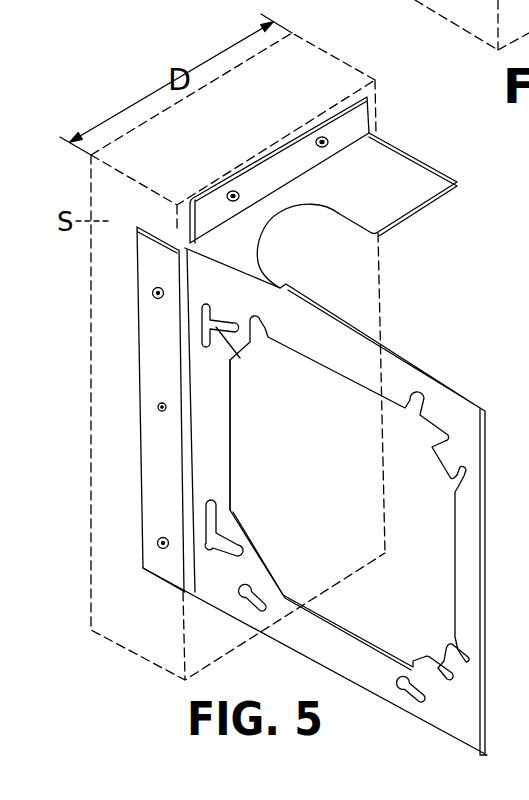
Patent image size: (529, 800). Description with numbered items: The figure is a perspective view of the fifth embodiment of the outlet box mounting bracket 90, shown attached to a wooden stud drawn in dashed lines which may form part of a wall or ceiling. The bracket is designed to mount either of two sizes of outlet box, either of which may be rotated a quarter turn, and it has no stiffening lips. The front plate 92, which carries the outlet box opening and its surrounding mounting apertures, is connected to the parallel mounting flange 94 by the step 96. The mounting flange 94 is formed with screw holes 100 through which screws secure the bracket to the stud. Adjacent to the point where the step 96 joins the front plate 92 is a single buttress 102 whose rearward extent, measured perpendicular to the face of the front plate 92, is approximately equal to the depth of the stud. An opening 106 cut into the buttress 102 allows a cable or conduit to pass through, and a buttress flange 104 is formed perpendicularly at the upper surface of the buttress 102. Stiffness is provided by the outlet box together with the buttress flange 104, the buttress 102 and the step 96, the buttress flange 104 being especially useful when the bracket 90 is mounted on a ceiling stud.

The mounting bracket 90 is at (411, 362).
The front plate 92 is at (343, 362).
The mounting flange 94 is at (138, 409).
The step 96 is at (182, 253).
The screw holes 100 is at (163, 292).
The buttress 102 is at (357, 210).
The buttress flange 104 is at (304, 153).
The opening 106 is at (338, 216).